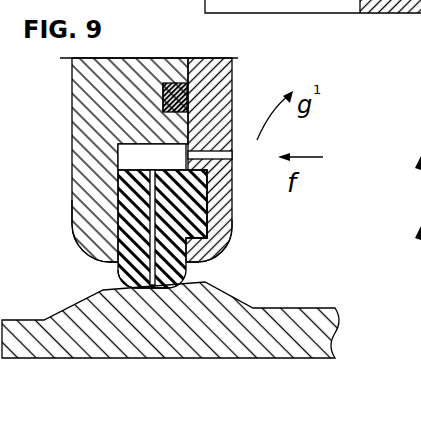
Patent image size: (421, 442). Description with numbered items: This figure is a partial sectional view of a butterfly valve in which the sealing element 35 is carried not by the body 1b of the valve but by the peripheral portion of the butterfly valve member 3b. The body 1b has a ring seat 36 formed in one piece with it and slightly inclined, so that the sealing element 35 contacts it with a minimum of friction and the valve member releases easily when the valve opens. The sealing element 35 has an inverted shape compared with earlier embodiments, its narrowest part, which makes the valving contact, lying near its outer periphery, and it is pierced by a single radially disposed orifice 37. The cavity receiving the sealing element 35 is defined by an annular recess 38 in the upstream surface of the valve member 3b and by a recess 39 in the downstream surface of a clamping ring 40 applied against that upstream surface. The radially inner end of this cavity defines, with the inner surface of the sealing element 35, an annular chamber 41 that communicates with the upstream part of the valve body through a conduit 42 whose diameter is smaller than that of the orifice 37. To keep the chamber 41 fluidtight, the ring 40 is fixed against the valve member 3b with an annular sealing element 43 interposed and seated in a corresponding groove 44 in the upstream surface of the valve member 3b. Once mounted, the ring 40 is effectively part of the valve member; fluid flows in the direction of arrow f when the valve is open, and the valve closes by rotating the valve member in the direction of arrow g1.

The body of the valve 1b is at (70, 333).
The butterfly valve member 3b is at (100, 225).
The sealing element 35 is at (226, 242).
The ring seat 36 is at (117, 292).
The radially disposed orifice 37 is at (153, 284).
The annular recess 38 is at (118, 160).
The recess 39 is at (205, 211).
The clamping ring 40 is at (217, 100).
The annular chamber 41 is at (128, 153).
The conduit 42 is at (189, 156).
The annular sealing element 43 is at (169, 83).
The groove 44 is at (163, 108).